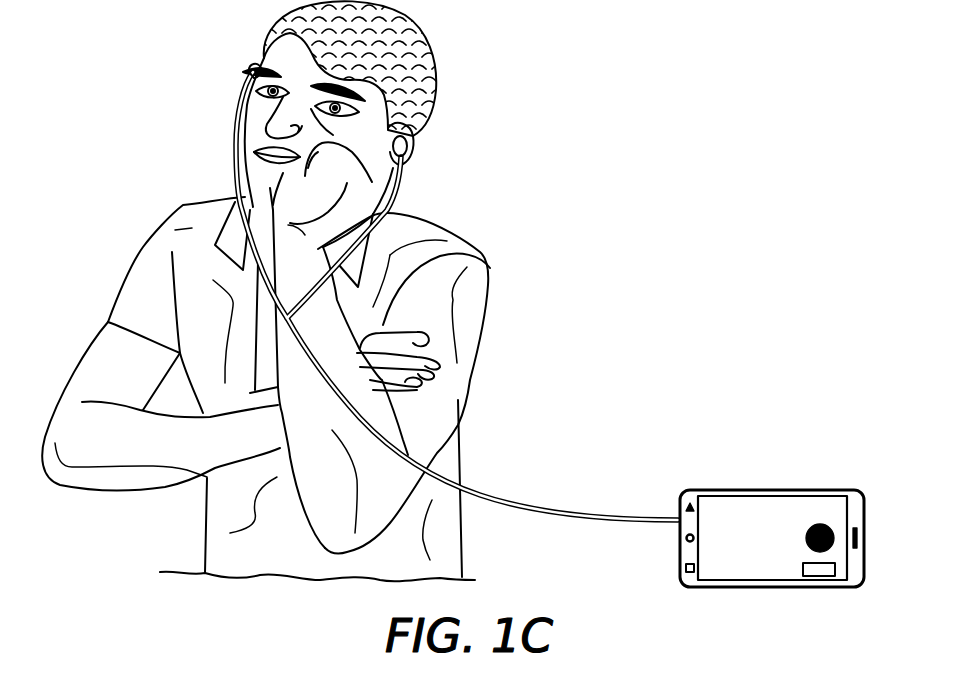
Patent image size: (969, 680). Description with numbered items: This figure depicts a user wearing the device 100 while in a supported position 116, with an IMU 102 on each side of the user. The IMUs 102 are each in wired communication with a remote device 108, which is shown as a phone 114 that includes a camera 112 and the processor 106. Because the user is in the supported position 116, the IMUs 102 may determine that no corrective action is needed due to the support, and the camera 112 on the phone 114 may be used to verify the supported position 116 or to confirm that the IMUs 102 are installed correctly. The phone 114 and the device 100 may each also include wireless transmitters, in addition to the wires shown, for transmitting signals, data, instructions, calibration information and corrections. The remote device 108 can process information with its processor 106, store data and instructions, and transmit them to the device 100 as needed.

The device 100 is at (176, 104).
The IMU 102 is at (253, 70).
The processor 106 is at (823, 578).
The remote device 108 is at (839, 485).
The camera 112 is at (818, 524).
The phone 114 is at (741, 500).
The supported position 116 is at (108, 227).